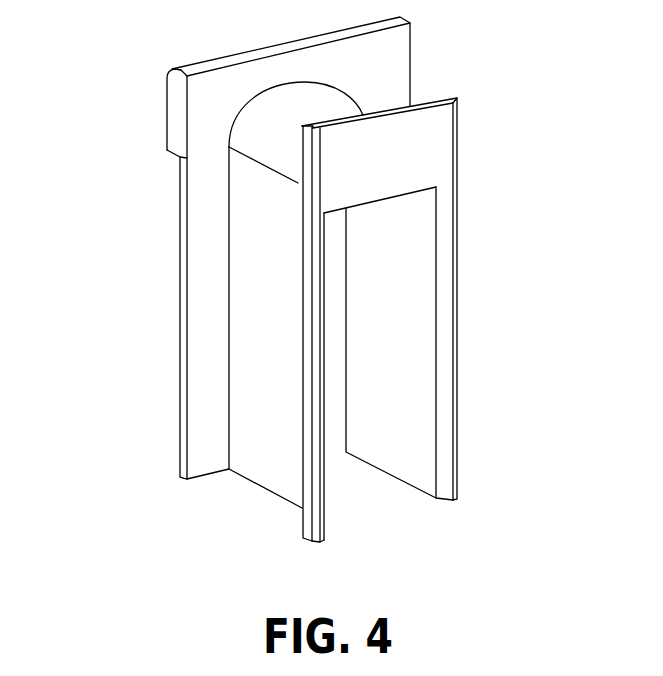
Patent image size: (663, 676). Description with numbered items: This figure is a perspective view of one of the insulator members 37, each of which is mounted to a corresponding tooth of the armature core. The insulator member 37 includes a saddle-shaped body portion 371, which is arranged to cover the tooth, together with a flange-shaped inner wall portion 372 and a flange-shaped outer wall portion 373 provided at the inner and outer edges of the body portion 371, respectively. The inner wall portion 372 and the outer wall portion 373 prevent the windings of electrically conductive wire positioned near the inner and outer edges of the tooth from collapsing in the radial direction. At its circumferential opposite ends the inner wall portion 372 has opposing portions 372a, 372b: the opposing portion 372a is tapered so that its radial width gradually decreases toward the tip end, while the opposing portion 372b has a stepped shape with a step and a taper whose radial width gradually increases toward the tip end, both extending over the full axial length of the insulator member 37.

The insulator member 37 is at (517, 87).
The body portion 371 is at (263, 104).
The inner wall portion 372 is at (423, 167).
The opposing portion 372a is at (458, 100).
The opposing portion 372b is at (300, 127).
The outer wall portion 373 is at (200, 120).